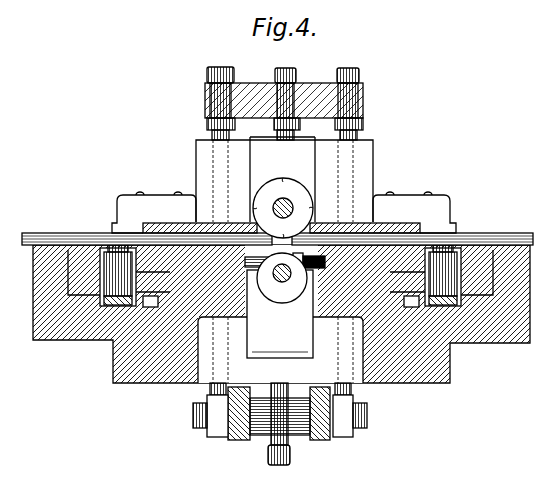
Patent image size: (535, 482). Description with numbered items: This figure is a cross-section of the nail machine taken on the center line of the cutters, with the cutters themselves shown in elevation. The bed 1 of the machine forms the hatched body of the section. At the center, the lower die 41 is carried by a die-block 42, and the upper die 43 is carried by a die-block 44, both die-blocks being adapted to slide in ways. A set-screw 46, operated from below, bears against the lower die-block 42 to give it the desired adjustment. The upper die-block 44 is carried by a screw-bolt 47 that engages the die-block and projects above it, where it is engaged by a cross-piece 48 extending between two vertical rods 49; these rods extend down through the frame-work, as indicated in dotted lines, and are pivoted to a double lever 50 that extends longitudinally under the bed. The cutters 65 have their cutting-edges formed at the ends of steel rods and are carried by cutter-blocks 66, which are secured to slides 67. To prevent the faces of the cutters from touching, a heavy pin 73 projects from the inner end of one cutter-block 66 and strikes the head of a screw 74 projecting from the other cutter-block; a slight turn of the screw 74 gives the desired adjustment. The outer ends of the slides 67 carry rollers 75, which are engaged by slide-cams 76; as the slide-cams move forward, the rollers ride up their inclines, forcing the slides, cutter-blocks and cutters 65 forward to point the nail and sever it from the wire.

The bed 1 is at (114, 355).
The lower die 41 is at (282, 278).
The die-block 42 is at (280, 314).
The upper die 43 is at (283, 208).
The die-block 44 is at (284, 185).
The set-screw 46 is at (289, 392).
The screw-bolt 47 is at (291, 130).
The cross-piece 48 is at (302, 90).
The vertical rods 49 is at (212, 135).
The double lever 50 is at (242, 441).
The cutters 65 is at (90, 239).
The cutter-blocks 66 is at (190, 230).
The slides 67 is at (280, 350).
The pin 73 is at (285, 259).
The screw 74 is at (292, 274).
The rollers 75 is at (138, 247).
The slide-cams 76 is at (74, 240).